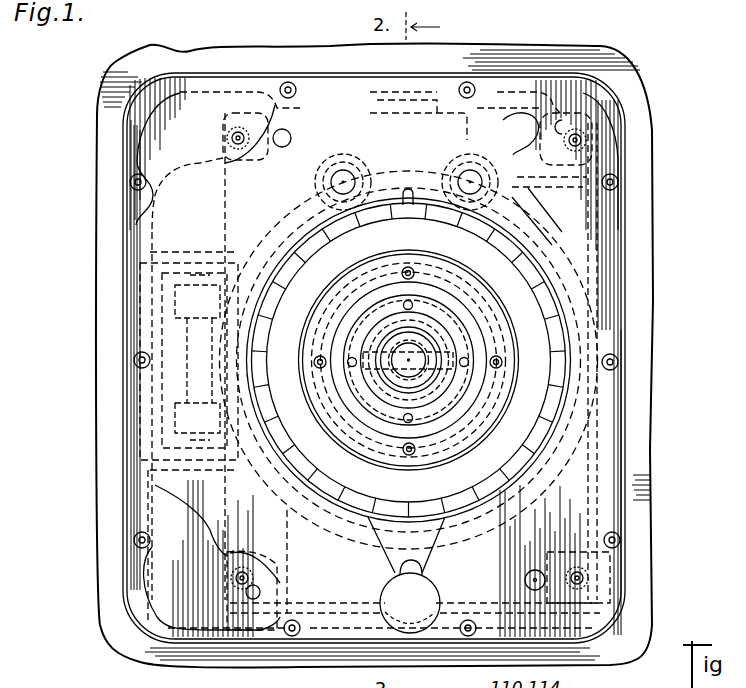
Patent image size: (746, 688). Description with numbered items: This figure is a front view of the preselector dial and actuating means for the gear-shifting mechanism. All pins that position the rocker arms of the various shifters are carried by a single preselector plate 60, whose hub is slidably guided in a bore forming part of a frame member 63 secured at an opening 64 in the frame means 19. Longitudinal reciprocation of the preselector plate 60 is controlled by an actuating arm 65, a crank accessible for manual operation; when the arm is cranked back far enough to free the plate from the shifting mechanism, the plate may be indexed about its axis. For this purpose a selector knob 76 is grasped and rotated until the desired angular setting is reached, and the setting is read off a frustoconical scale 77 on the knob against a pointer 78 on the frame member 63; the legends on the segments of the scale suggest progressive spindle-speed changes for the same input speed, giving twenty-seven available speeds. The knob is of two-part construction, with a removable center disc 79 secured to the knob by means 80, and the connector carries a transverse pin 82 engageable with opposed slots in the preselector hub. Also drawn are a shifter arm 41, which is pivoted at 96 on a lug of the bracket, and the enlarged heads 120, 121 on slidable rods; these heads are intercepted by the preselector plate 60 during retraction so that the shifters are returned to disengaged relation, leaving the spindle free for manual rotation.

The frame means 19 is at (645, 385).
The shifter arm 41 is at (158, 310).
The preselector plate 60 is at (303, 230).
The frame member 63 is at (597, 490).
The opening 64 is at (162, 485).
The actuating arm 65 is at (425, 593).
The selector knob 76 is at (491, 398).
The frustoconical scale 77 is at (551, 286).
The pointer 78 is at (410, 190).
The center disc 79 is at (466, 428).
The securing means 80 is at (414, 268).
The transverse pin 82 is at (420, 352).
The pivot 96 is at (188, 343).
The enlarged head 120 is at (353, 167).
The enlarged head 121 is at (482, 168).